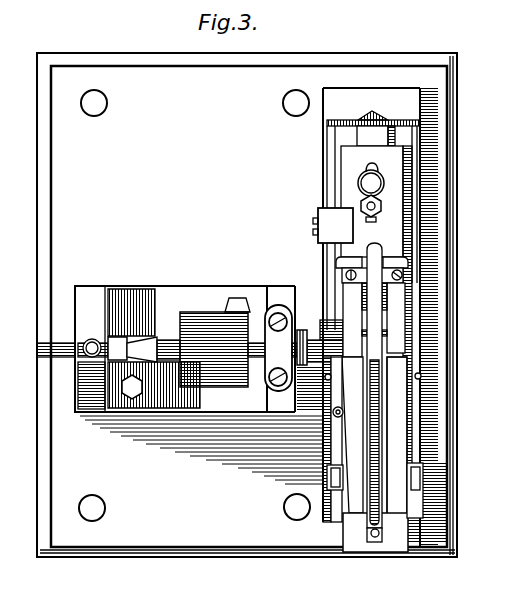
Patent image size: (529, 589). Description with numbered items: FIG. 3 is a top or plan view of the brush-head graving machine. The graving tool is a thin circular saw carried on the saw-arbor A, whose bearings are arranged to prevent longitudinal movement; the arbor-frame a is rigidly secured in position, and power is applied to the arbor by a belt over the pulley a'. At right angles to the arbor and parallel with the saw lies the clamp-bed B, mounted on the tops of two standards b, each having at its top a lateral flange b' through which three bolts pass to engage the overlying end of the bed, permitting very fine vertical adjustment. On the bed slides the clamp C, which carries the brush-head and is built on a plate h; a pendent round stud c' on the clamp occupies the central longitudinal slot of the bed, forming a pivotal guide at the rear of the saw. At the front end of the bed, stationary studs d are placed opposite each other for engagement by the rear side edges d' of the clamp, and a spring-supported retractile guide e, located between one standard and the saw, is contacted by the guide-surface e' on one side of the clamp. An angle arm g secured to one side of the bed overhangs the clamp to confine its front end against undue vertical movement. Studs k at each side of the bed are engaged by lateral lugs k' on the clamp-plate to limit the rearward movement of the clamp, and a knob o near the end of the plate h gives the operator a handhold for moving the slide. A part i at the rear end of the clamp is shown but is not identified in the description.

The saw-arbor A is at (142, 350).
The arbor-frame a is at (148, 308).
The pulley a' is at (215, 342).
The clamp-bed B is at (376, 317).
The standards b is at (373, 309).
The lateral flange b' is at (337, 111).
The pendent stud c' is at (382, 207).
The knob o is at (371, 183).
The angle arm g is at (333, 225).
The clamp-plate h is at (375, 352).
The sliding clamp C is at (381, 386).
The lateral lugs k' is at (372, 263).
The studs k is at (360, 379).
The guide-surface e' is at (349, 391).
The retractile guide e is at (346, 418).
The rear side edges d' is at (374, 437).
The stationary studs d is at (359, 490).
The pin i is at (376, 538).